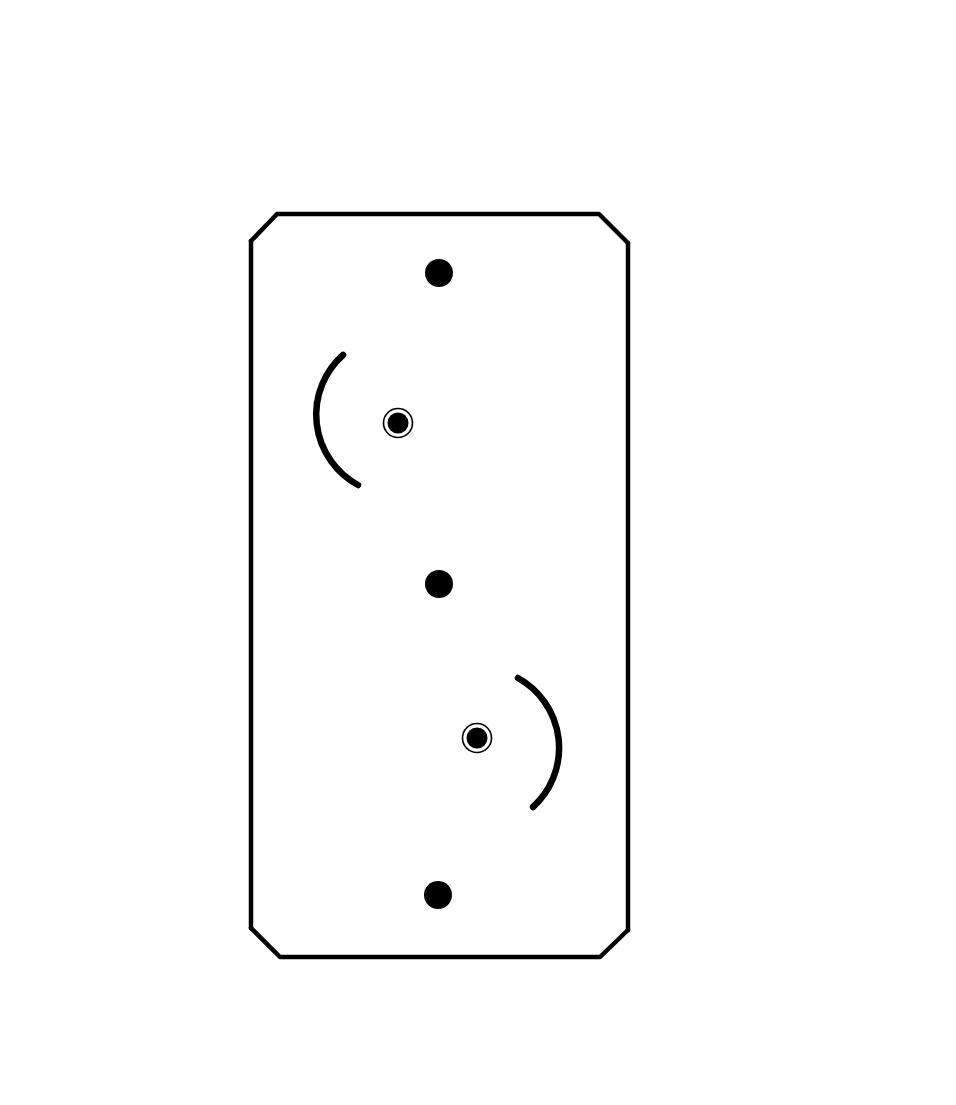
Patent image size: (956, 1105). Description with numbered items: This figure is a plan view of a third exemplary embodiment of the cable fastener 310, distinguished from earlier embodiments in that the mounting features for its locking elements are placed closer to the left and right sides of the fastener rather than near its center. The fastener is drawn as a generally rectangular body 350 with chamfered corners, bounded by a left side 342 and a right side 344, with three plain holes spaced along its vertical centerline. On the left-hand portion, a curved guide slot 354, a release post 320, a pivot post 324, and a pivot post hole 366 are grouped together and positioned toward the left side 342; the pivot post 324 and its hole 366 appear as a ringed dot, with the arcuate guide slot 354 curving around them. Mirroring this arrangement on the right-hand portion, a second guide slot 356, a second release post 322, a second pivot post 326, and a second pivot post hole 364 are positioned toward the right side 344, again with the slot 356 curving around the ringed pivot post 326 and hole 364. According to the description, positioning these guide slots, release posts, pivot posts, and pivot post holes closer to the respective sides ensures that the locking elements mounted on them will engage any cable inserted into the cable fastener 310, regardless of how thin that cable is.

The cable fastener 310 is at (222, 191).
The plate body 350 is at (348, 258).
The left side edge 342 is at (247, 605).
The right side 344 is at (629, 573).
The release post 320 is at (328, 458).
The guide slot 354 is at (327, 377).
The release post 322 is at (540, 690).
The guide slot 356 is at (558, 770).
The pivot post 324 is at (408, 413).
The pivot post hole 366 is at (412, 428).
The pivot post 326 is at (463, 742).
The pivot post hole 364 is at (463, 727).